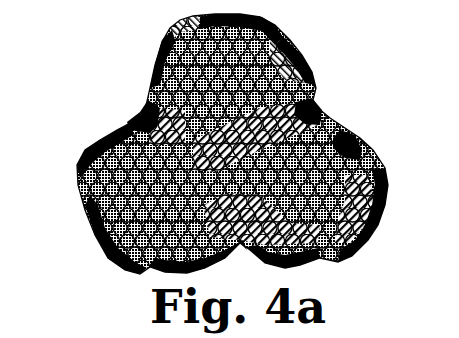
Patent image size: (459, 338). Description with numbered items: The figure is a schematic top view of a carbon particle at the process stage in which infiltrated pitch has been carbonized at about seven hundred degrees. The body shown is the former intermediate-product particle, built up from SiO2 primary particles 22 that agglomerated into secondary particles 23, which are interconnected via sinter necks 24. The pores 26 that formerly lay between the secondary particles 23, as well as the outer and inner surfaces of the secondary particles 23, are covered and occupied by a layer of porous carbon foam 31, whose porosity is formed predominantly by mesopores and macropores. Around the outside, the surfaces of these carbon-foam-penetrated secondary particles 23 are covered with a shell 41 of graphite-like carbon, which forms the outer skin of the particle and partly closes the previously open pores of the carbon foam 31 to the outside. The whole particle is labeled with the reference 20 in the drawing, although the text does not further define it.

The trilobal fiber 20 is at (366, 249).
The primary particles 22 is at (157, 63).
The secondary particles 23 is at (293, 45).
The sinter necks 24 is at (143, 122).
The pores 26 is at (315, 100).
The carbon foam 31 is at (318, 265).
The shell 41 is at (347, 138).